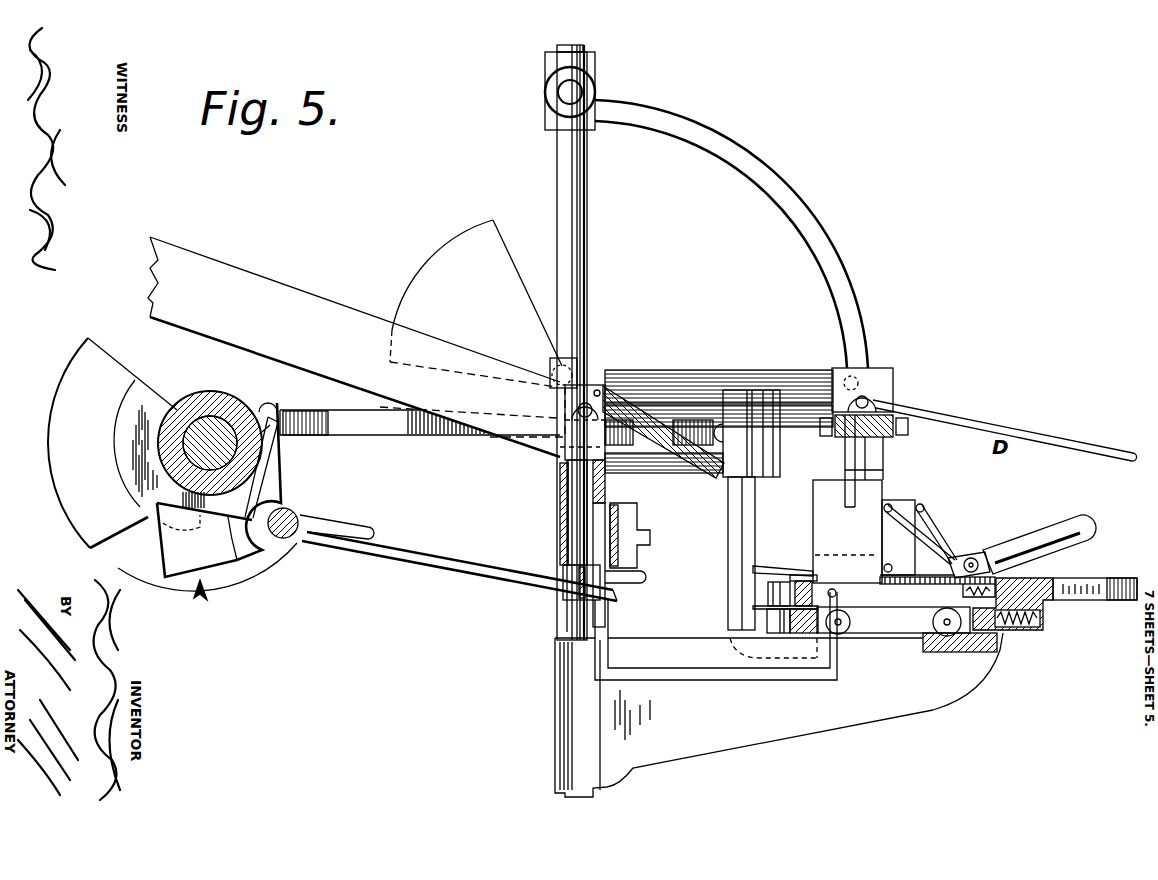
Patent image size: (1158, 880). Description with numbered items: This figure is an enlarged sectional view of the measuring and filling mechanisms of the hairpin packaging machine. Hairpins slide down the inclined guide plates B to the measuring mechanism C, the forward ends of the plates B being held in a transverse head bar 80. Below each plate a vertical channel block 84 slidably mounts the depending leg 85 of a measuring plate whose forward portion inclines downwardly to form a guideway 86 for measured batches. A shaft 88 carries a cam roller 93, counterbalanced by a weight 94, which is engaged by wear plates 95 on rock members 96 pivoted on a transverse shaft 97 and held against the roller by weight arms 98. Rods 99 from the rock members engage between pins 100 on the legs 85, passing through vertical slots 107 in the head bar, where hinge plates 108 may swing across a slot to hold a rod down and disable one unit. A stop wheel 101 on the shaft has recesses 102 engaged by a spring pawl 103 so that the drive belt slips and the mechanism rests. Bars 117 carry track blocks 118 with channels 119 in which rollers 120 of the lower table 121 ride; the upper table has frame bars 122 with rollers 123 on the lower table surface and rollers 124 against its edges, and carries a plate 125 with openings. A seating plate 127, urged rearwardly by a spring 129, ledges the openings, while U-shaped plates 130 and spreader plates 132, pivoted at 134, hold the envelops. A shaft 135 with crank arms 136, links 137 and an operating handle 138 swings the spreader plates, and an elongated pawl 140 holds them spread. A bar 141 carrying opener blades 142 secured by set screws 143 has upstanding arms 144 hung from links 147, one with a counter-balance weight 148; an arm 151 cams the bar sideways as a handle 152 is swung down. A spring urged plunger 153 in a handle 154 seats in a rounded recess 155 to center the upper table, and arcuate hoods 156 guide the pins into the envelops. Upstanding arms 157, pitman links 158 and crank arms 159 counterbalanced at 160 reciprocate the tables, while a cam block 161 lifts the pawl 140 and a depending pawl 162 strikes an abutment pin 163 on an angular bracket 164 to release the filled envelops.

The head bar 80 is at (610, 492).
The vertical channel block 84 is at (562, 474).
The depending vertical leg 85 is at (580, 497).
The guideway 86 is at (693, 462).
The shaft 88 is at (197, 405).
The cam roller 93 is at (224, 395).
The weight 94 is at (95, 366).
The wear plates 95 is at (262, 468).
The rock members 96 is at (284, 505).
The transverse shaft 97 is at (300, 514).
The weight arms 98 is at (176, 540).
The rods 99 is at (437, 567).
The pins 100 is at (563, 594).
The stop wheel 101 is at (252, 568).
The recess 102 is at (192, 584).
The spring pawl 103 is at (200, 598).
The vertical slots 107 is at (606, 533).
The hinge plates 108 is at (630, 533).
The bars 117 is at (573, 296).
The track blocks 118 is at (803, 707).
The longitudinal channels 119 is at (1002, 638).
The rollers 120 is at (849, 614).
The lower table 121 is at (893, 620).
The frame bars 122 is at (790, 590).
The rollers 123 is at (806, 578).
The rollers 124 is at (770, 620).
The plate 125 is at (973, 556).
The envelop seating plate 127 is at (842, 585).
The spring 129 is at (1000, 582).
The U-shaped plates 130 is at (813, 507).
The spreader plates 132 is at (887, 500).
The pivot 134 is at (884, 567).
The shaft 135 is at (987, 560).
The crank arms 136 is at (962, 532).
The links 137 is at (930, 515).
The operating handle 138 is at (1070, 528).
The elongated pawl 140 is at (773, 566).
The bar 141 is at (882, 443).
The opener blades 142 is at (883, 468).
The set screws 143 is at (905, 426).
The upstanding arms 144 is at (880, 392).
The links 147 is at (797, 413).
The counter-balance weight 148 is at (447, 267).
The arm 151 is at (800, 216).
The handle 152 is at (1082, 442).
The spring urged plunger 153 is at (1008, 620).
The handle 154 is at (1097, 588).
The rounded recess 155 is at (962, 648).
The arcuate hoods 156 is at (755, 395).
The upstanding arms 157 is at (740, 527).
The pitman links 158 is at (410, 430).
The crank arms 159 is at (263, 402).
The counterbalance 160 is at (126, 423).
The cam block 161 is at (650, 585).
The depending pawl 162 is at (953, 588).
The abutment pin 163 is at (838, 592).
The angular bracket 164 is at (730, 672).
The guide plates B is at (335, 305).
The measuring mechanism C is at (628, 393).